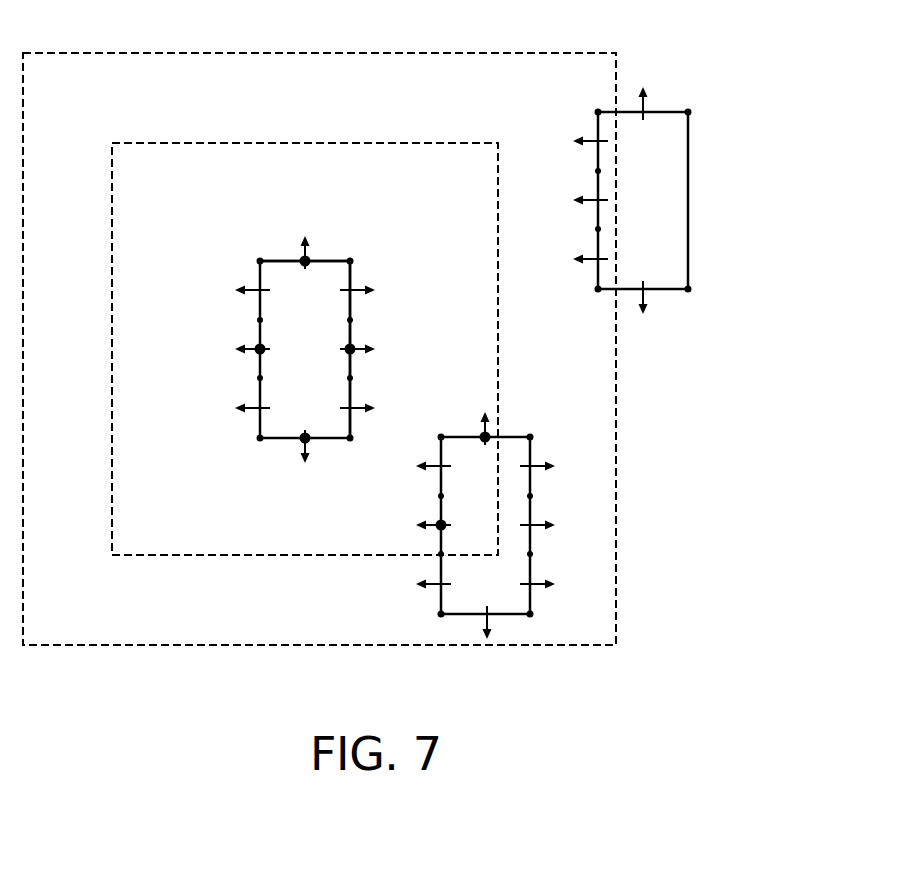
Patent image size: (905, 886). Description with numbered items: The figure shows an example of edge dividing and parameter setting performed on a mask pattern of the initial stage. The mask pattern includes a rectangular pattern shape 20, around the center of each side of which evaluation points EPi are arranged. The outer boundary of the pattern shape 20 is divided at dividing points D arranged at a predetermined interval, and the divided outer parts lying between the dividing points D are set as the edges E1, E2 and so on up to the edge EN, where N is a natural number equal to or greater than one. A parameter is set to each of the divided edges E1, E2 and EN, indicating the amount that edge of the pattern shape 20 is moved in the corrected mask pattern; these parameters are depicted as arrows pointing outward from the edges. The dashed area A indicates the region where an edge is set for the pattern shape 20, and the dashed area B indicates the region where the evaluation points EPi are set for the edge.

The area A is at (548, 53).
The area B is at (447, 143).
The pattern shape 20 is at (310, 352).
The edge E1 is at (333, 261).
The edge E2 is at (350, 306).
The evaluation point EPi is at (300, 259).
The dividing point D is at (259, 320).
The edge EN is at (660, 186).